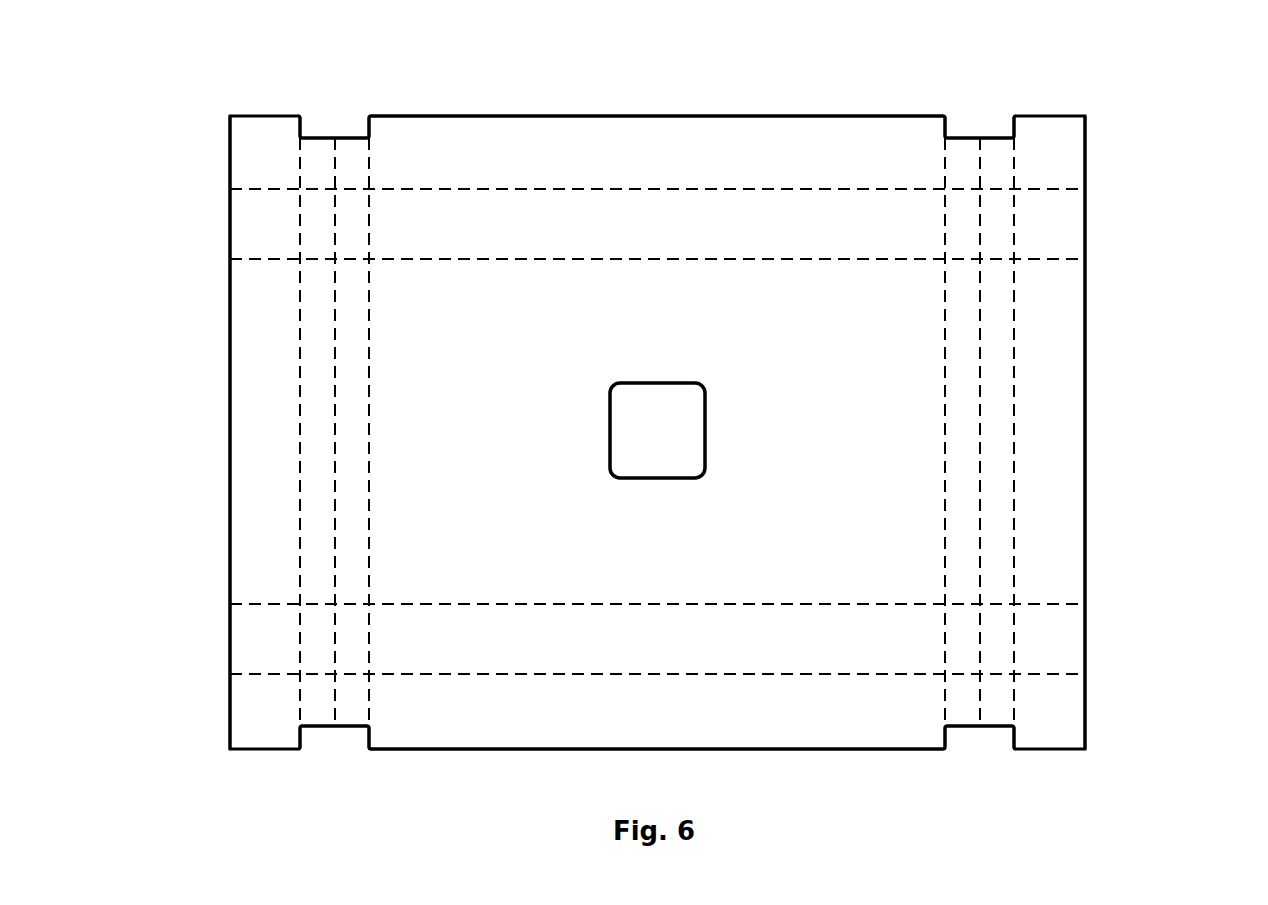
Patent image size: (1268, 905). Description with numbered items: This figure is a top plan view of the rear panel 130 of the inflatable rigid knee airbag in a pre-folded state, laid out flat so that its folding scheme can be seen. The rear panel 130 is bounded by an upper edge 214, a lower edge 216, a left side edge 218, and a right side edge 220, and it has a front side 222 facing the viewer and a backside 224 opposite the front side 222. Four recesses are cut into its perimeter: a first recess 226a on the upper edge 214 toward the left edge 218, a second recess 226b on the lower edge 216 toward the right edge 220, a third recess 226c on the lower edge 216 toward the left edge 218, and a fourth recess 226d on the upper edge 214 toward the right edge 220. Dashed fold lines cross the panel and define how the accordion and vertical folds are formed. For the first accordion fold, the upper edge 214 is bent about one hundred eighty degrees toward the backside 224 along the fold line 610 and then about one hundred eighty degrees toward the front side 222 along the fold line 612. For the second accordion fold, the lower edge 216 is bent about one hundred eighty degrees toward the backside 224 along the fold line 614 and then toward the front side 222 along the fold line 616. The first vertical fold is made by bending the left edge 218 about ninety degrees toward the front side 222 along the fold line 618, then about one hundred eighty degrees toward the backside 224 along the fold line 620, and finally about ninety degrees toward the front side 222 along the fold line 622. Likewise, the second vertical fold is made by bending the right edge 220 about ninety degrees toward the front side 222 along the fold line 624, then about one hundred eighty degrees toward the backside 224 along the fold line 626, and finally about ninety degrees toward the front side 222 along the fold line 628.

The rear panel 130 is at (543, 95).
The upper edge 214 is at (722, 116).
The lower edge 216 is at (790, 750).
The left side edge 218 is at (230, 488).
The right side edge 220 is at (1086, 415).
The front side 222 is at (244, 312).
The backside 224 is at (260, 393).
The first recess 226a is at (334, 140).
The second recess 226b is at (977, 138).
The third recess 226c is at (325, 728).
The fourth recess 226d is at (988, 727).
The fold line 610 is at (728, 258).
The fold line 612 is at (730, 189).
The fold line 614 is at (728, 603).
The fold line 616 is at (732, 672).
The fold line 618 is at (370, 450).
The fold line 620 is at (335, 384).
The fold line 622 is at (300, 428).
The fold line 624 is at (944, 360).
The fold line 626 is at (980, 405).
The fold line 628 is at (1015, 358).